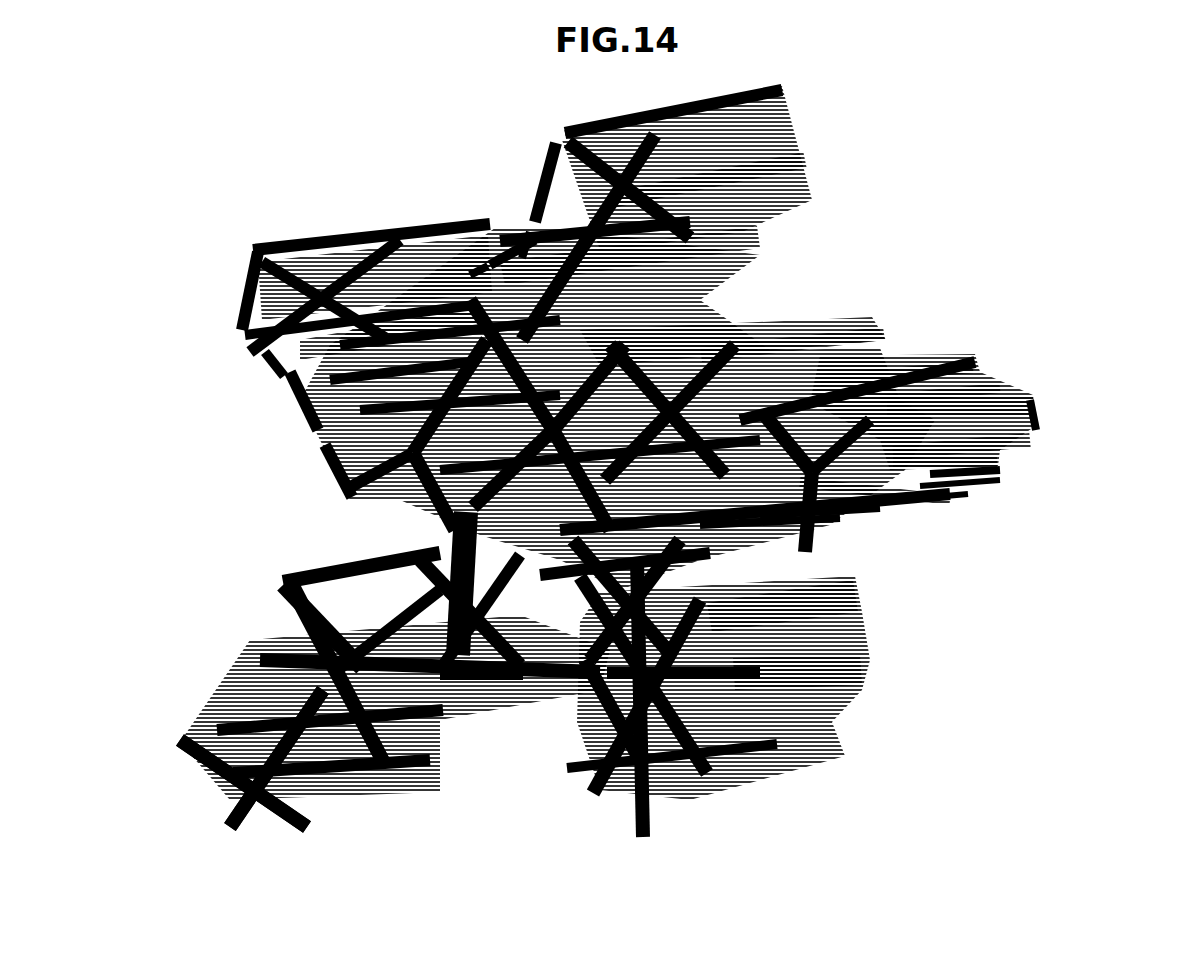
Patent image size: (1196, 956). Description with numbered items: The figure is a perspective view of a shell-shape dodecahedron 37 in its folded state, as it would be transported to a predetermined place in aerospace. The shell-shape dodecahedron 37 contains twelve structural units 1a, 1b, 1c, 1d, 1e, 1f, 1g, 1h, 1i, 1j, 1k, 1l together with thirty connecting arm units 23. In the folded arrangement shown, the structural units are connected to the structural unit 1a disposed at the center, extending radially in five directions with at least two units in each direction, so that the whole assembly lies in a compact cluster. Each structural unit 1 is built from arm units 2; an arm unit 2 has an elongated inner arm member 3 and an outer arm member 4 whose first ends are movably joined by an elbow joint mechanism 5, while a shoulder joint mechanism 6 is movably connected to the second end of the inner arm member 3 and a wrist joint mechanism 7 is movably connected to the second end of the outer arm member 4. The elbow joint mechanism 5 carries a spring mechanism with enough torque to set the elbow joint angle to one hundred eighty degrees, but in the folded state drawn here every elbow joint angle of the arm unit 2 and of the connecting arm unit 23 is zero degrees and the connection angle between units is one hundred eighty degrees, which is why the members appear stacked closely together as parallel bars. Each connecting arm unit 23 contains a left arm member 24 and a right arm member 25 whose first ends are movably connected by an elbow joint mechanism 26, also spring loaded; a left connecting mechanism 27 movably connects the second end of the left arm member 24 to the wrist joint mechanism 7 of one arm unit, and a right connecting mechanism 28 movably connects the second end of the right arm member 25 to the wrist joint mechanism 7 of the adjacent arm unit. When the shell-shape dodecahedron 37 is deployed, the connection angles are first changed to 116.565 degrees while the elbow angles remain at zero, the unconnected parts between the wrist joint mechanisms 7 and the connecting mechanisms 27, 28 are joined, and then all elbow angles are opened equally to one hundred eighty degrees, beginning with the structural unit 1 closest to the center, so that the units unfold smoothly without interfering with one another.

The structural unit 1 is at (783, 100).
The structural unit 1a is at (450, 533).
The structural unit 1b is at (322, 420).
The structural unit 1c is at (240, 290).
The structural unit 1d is at (470, 262).
The structural unit 1e is at (547, 150).
The structural unit 1f is at (790, 322).
The structural unit 1g is at (740, 420).
The structural unit 1h is at (715, 690).
The structural unit 1i is at (625, 800).
The structural unit 1j is at (480, 665).
The structural unit 1k is at (360, 740).
The structural unit 1l is at (225, 812).
The arm unit 2 is at (965, 495).
The inner arm member 3 is at (935, 412).
The outer arm member 4 is at (970, 480).
The elbow joint mechanism 5 is at (975, 470).
The shoulder joint mechanism 6 is at (835, 522).
The wrist joint mechanism 7 is at (875, 515).
The connecting arm unit 23 is at (785, 160).
The left arm member 24 is at (1030, 412).
The right arm member 25 is at (1030, 452).
The elbow joint mechanism 26 is at (1036, 426).
The left connecting mechanism 27 is at (900, 408).
The right connecting mechanism 28 is at (905, 495).
The shell-shape dodecahedron 37 is at (808, 232).